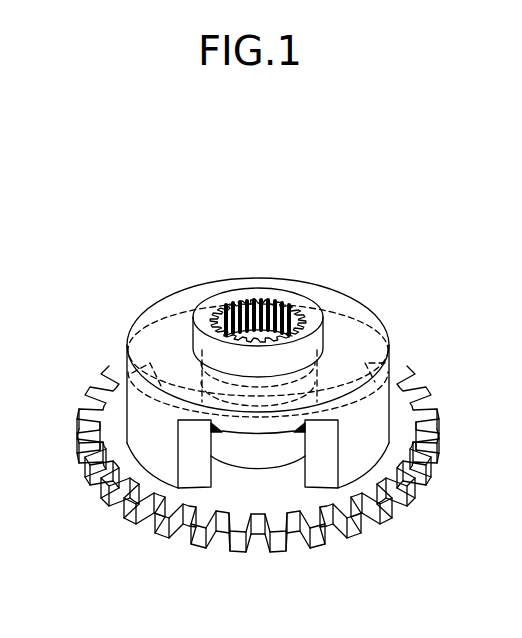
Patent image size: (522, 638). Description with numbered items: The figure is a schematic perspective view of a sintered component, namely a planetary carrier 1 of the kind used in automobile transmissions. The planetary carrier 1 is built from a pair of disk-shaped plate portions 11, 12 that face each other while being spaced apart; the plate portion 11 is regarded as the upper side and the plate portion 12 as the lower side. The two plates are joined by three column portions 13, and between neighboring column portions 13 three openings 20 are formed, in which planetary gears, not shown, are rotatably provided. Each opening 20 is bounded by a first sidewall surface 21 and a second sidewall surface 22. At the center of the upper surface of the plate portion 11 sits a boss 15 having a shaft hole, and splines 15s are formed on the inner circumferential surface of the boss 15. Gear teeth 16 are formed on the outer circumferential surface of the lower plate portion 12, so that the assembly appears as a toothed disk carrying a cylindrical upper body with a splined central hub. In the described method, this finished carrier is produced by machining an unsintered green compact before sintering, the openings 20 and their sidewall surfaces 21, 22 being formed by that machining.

The planetary carrier 1 is at (98, 262).
The plate portion 11 is at (360, 332).
The plate portion 12 is at (240, 503).
The column portion 13 is at (142, 427).
The boss 15 is at (313, 307).
The splines 15s is at (256, 306).
The gear teeth 16 is at (423, 497).
The opening 20 is at (257, 473).
The first sidewall surface 21 is at (325, 470).
The second sidewall surface 22 is at (193, 463).